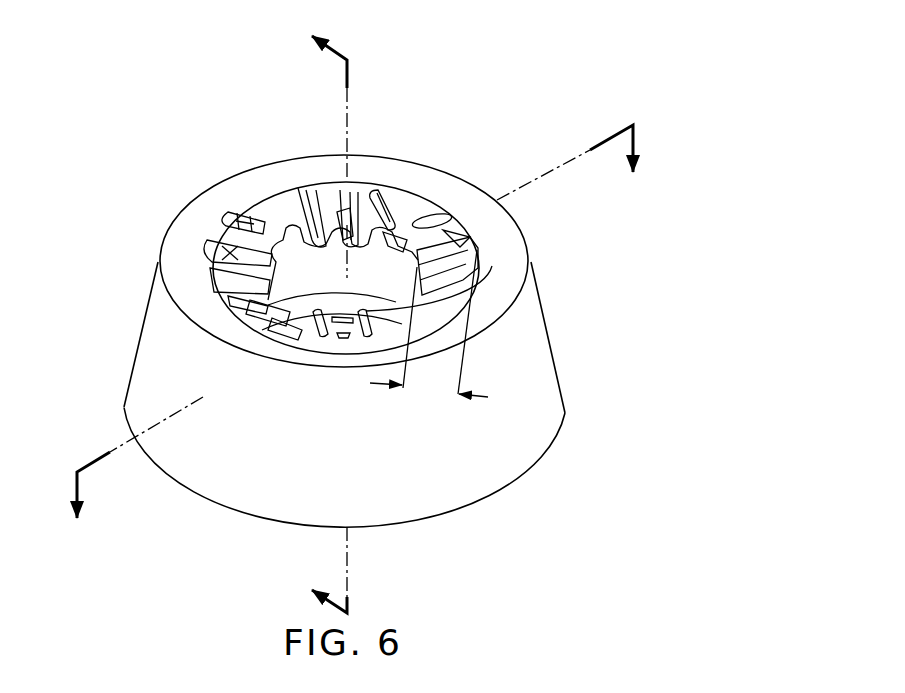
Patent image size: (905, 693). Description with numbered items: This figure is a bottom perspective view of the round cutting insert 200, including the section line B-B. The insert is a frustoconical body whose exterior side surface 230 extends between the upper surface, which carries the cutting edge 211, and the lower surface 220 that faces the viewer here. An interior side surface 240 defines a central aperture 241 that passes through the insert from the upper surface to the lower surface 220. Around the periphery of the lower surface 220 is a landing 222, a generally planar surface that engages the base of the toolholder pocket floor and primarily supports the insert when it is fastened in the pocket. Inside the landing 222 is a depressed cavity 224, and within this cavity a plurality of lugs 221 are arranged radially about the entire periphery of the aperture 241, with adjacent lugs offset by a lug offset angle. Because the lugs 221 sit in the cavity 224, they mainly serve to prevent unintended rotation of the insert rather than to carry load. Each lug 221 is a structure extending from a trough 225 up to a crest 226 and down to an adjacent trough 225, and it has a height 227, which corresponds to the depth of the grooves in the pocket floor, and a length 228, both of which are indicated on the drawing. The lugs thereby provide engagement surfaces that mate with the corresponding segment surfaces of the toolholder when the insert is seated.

The round cutting insert 200 is at (353, 312).
The cutting edge 211 is at (485, 498).
The lower surface 220 is at (223, 192).
The lugs 221 is at (288, 240).
The landing 222 is at (498, 218).
The depressed cavity 224 is at (422, 177).
The trough 225 is at (300, 230).
The crest 226 is at (305, 227).
The height 227 is at (356, 226).
The length 228 is at (429, 328).
The exterior side surface 230 is at (368, 452).
The interior side surface 240 is at (337, 286).
The aperture 241 is at (394, 264).